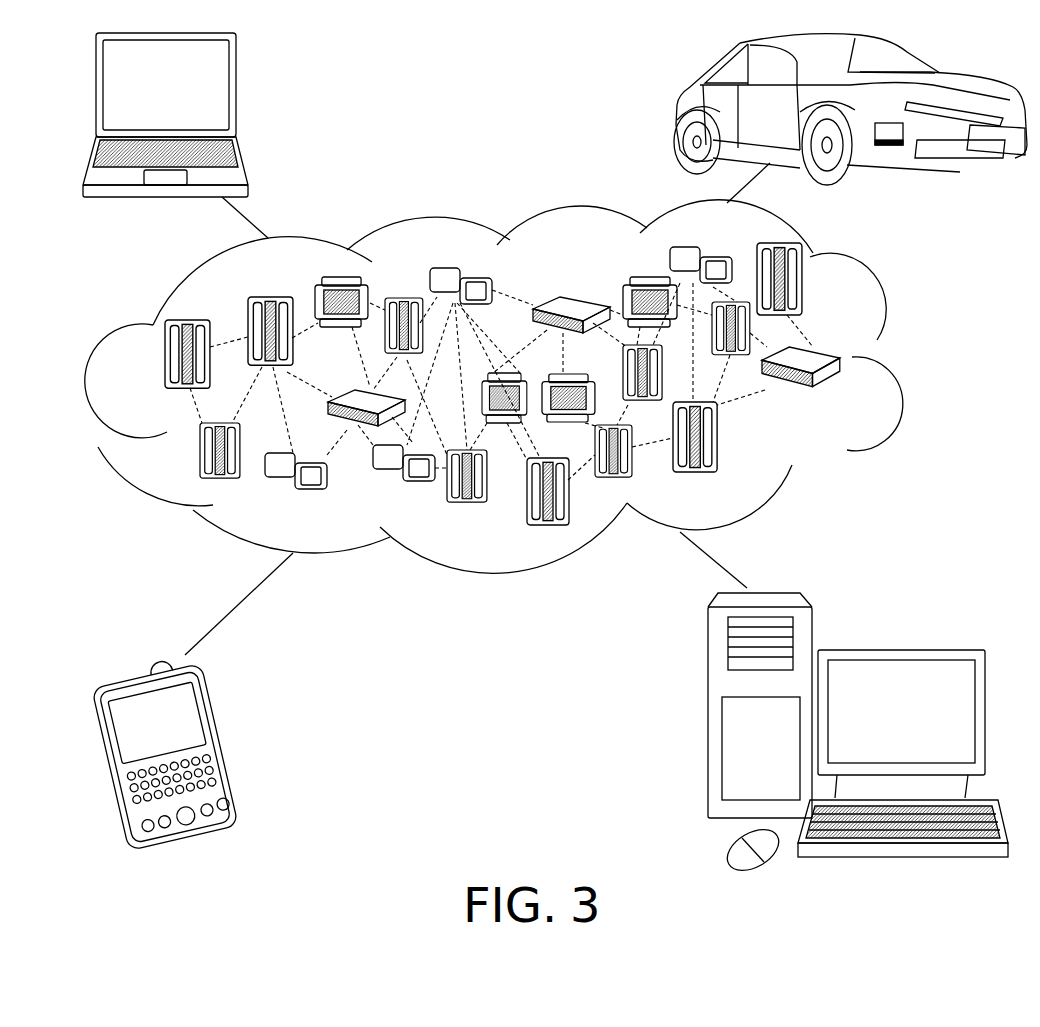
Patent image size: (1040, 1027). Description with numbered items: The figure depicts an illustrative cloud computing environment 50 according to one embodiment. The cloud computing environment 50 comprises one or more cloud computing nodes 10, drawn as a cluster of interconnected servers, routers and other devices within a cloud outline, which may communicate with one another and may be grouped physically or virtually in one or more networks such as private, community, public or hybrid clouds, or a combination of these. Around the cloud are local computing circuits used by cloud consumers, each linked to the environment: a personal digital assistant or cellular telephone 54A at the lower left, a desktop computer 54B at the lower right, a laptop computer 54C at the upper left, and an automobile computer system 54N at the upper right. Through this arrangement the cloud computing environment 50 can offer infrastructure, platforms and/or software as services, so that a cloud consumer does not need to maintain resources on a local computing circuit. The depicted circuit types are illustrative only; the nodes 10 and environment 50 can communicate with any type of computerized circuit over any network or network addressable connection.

The cloud computing node 10 is at (845, 393).
The cloud computing environment 50 is at (902, 366).
The personal digital assistant or cellular telephone 54A is at (228, 745).
The desktop computer 54B is at (900, 642).
The laptop computer 54C is at (236, 92).
The automobile computer system 54N is at (679, 115).